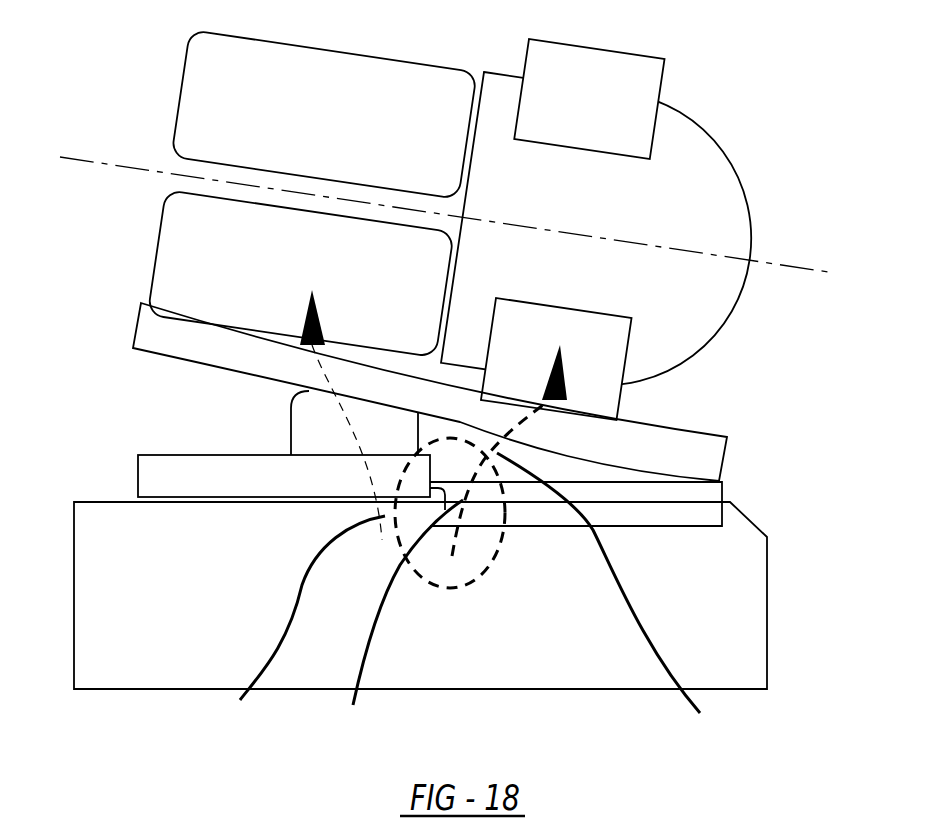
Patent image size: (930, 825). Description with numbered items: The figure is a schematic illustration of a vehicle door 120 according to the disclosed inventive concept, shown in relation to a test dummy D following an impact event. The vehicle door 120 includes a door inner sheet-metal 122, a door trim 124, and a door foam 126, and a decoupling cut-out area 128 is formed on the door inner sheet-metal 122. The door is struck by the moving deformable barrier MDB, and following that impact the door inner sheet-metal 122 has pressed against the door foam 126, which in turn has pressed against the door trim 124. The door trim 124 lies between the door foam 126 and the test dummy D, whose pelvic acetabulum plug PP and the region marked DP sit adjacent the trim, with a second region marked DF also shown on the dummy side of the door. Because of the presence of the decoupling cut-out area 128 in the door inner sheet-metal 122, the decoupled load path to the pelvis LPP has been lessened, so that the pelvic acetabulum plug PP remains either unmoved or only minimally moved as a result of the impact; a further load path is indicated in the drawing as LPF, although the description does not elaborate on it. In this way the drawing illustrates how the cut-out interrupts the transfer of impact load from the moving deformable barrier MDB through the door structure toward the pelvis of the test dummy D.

The vehicle door 120 is at (124, 394).
The door inner sheet-metal 122 is at (150, 472).
The door trim 124 is at (152, 333).
The door foam 126 is at (305, 429).
The decoupling cut-out area 128 is at (439, 570).
The test dummy D is at (693, 148).
The front deposit DF is at (348, 124).
The pelvic acetabulum plug PP is at (608, 114).
The disc plate DP is at (675, 226).
The moving deformable barrier MDB is at (572, 625).
The front load path LPF is at (297, 627).
The decoupled load path to the pelvis LPP is at (615, 599).